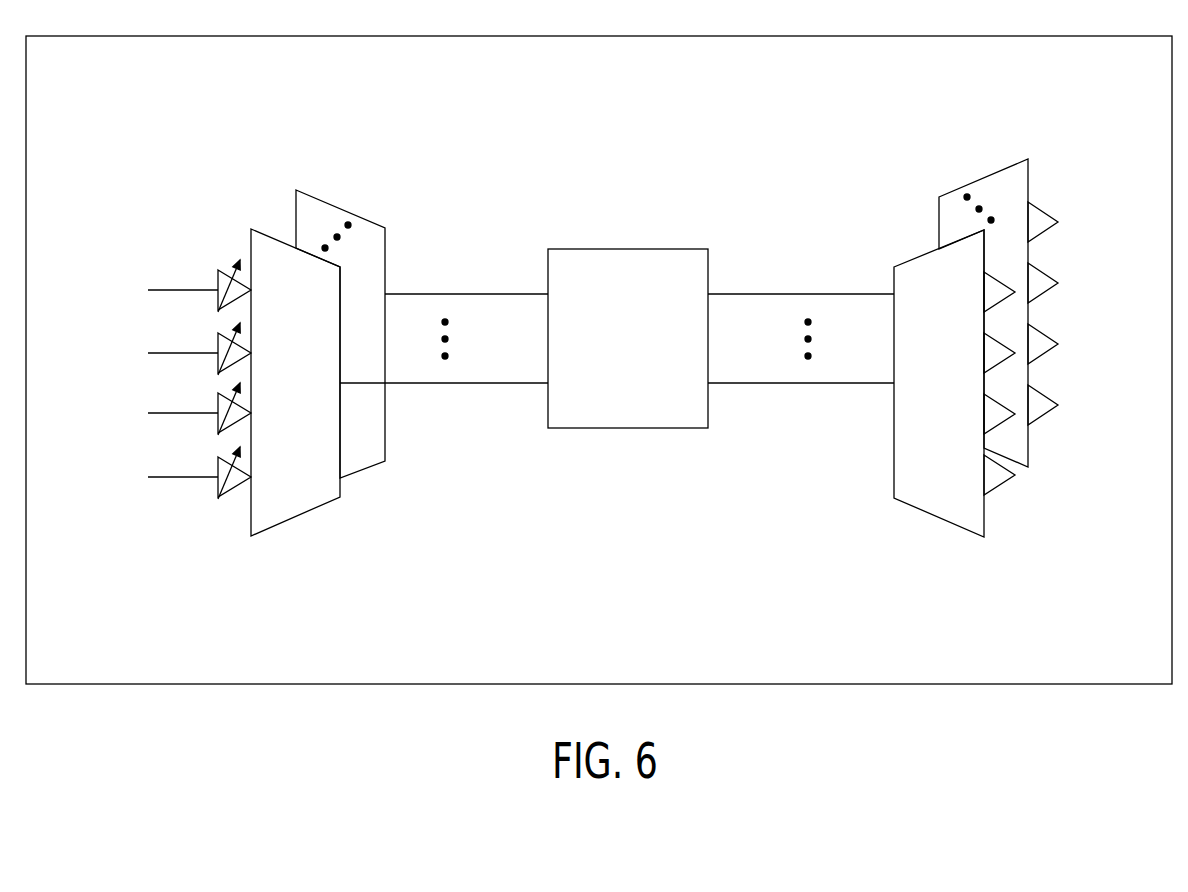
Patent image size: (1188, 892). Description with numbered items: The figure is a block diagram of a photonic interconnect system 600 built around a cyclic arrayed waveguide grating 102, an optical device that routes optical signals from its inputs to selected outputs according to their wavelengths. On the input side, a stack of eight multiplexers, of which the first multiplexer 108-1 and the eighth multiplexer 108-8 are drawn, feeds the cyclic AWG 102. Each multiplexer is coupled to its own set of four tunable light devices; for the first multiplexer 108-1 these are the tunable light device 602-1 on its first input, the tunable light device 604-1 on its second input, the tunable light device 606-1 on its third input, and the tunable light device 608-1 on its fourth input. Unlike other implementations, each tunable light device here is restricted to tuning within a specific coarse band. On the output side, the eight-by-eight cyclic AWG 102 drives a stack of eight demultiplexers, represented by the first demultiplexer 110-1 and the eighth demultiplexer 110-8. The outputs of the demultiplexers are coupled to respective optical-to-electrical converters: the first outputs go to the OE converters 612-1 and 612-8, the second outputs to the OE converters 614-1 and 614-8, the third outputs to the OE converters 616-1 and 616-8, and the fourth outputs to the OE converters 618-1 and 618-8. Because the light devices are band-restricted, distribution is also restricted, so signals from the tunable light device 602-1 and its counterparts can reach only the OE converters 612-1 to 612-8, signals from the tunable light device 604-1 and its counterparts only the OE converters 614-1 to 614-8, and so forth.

The photonic interconnect system 600 is at (605, 36).
The cyclic arrayed waveguide grating 102 is at (628, 248).
The multiplexer 108-1 is at (295, 520).
The multiplexer 108-8 is at (360, 470).
The demultiplexer 110-1 is at (938, 517).
The demultiplexer 110-8 is at (1020, 467).
The tunable light device 602-1 is at (177, 290).
The tunable light device 604-1 is at (177, 353).
The tunable light device 606-1 is at (177, 413).
The tunable light device 608-1 is at (177, 477).
The OE converter 612-1 is at (1003, 279).
The OE converter 614-1 is at (1007, 347).
The OE converter 616-1 is at (1000, 424).
The OE converter 618-1 is at (1000, 487).
The OE converter 612-8 is at (1043, 211).
The OE converter 614-8 is at (1043, 273).
The OE converter 616-8 is at (1043, 335).
The OE converter 618-8 is at (1045, 396).